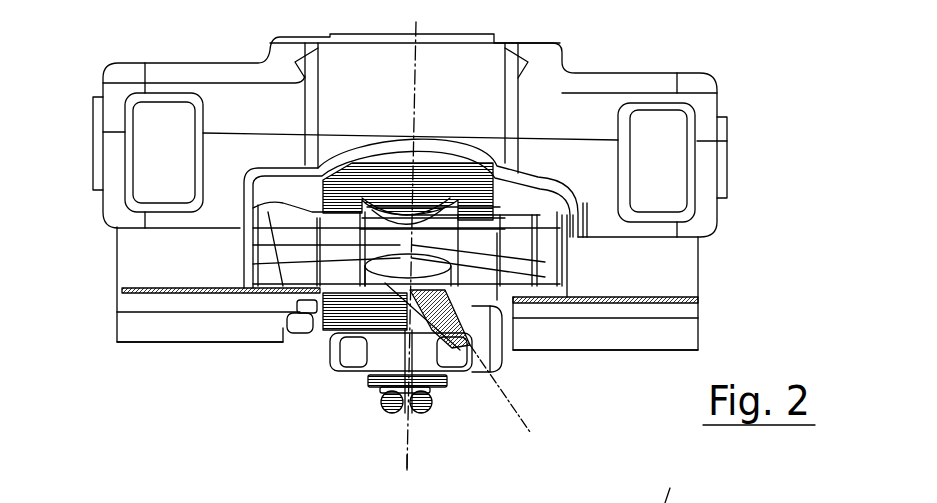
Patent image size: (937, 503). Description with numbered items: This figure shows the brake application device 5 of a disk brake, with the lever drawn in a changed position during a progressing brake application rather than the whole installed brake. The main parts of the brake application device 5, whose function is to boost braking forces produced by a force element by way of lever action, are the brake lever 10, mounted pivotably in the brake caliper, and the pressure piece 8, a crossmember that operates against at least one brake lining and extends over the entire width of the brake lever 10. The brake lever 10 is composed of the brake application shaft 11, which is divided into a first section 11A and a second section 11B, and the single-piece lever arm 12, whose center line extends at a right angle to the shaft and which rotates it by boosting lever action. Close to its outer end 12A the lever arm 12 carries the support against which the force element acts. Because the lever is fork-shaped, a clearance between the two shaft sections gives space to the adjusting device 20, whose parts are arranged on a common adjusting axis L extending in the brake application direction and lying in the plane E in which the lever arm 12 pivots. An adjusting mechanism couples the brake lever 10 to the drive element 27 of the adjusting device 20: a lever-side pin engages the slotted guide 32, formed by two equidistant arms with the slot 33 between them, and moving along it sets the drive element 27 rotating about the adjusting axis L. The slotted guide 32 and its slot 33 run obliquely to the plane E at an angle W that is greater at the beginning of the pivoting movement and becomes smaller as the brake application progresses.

The pressure piece 8 is at (223, 160).
The adjusting axis L is at (417, 104).
The brake lever 10 is at (507, 192).
The outer end of the lever arm 12A is at (383, 223).
The adjusting device 20 is at (518, 242).
The brake application shaft 11 is at (117, 267).
The first section of the brake application shaft 11A is at (152, 318).
The second section of the brake application shaft 11B is at (642, 337).
The brake application device 5 is at (236, 351).
The lever arm 12 is at (356, 283).
The slotted guide 32 is at (463, 315).
The slot 33 is at (463, 327).
The drive element 27 is at (500, 353).
The angle W is at (512, 403).
The plane E is at (407, 460).